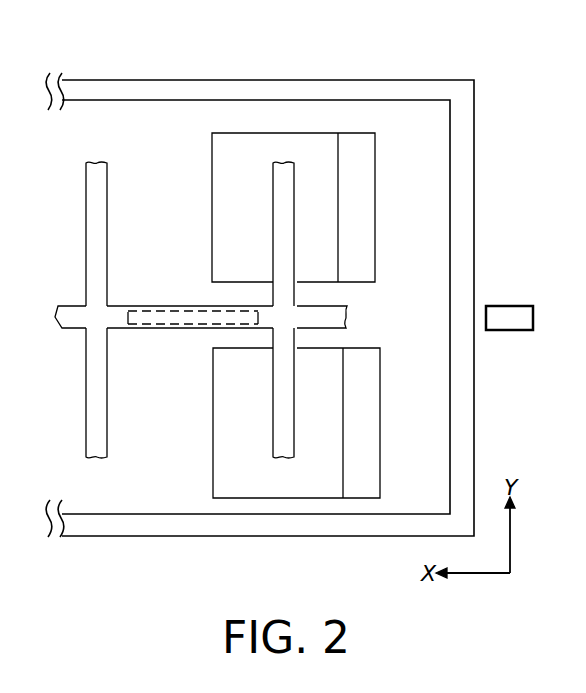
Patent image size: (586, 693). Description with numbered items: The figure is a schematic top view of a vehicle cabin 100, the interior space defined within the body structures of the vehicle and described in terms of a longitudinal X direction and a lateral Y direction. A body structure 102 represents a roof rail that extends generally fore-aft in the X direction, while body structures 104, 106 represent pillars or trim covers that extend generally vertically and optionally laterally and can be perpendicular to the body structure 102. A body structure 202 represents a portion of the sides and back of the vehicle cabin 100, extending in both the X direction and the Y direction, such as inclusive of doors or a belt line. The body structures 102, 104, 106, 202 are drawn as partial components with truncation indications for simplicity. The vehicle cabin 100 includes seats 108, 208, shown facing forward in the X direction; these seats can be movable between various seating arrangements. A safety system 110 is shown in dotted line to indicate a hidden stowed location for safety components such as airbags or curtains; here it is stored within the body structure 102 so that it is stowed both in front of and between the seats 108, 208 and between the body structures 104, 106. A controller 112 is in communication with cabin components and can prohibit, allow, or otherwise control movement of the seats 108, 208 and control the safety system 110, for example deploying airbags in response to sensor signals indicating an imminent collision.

The vehicle cabin 100 is at (440, 137).
The body structure 102 is at (348, 313).
The body structure 104 is at (86, 420).
The body structure 106 is at (273, 418).
The seat 108 is at (381, 417).
The safety system 110 is at (165, 306).
The controller 112 is at (510, 331).
The body structure 202 is at (220, 80).
The seat 208 is at (376, 201).